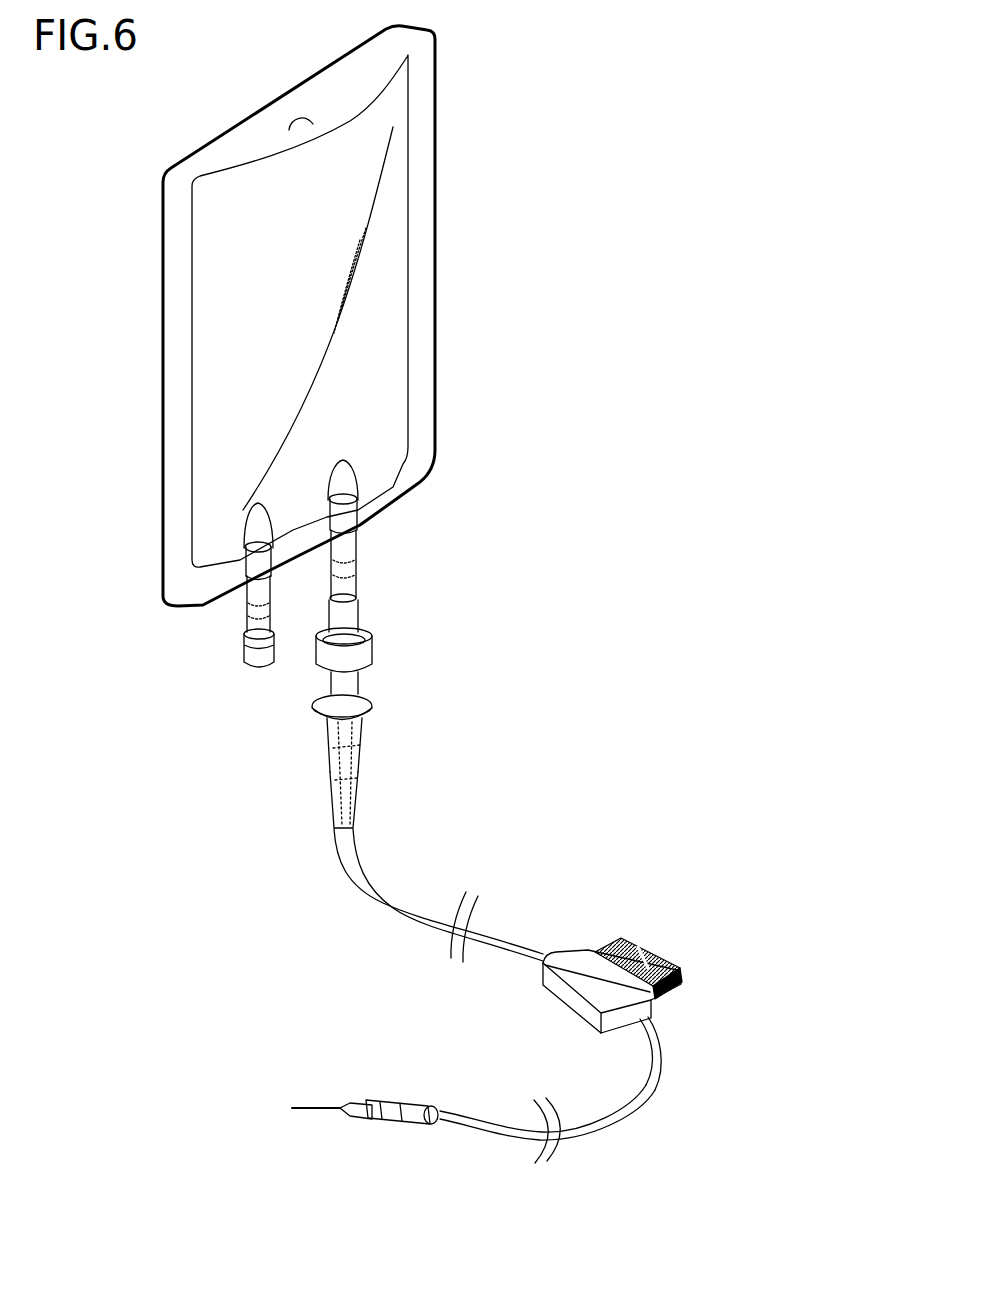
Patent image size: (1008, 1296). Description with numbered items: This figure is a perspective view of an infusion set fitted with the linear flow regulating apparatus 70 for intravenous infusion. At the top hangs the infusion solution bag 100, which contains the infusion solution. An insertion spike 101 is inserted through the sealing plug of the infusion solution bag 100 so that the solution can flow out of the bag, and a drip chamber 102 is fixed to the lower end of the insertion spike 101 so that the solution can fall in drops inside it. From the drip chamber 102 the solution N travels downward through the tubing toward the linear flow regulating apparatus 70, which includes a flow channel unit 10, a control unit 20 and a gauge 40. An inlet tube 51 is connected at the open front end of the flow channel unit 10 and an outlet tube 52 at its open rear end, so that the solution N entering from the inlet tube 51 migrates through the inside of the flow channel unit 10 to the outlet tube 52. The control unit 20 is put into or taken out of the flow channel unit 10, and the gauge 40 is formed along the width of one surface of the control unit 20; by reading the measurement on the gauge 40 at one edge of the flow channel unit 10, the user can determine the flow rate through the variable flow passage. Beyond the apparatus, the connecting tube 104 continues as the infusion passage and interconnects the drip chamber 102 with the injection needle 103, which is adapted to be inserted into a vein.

The infusion solution bag 100 is at (390, 300).
The insertion spike 101 is at (345, 690).
The drip chamber 102 is at (348, 737).
The solution N is at (348, 785).
The inlet tube 51 is at (495, 935).
The linear flow regulating apparatus 70 is at (608, 918).
The flow channel unit 10 is at (548, 1003).
The gauge 40 is at (650, 955).
The control unit 20 is at (680, 960).
The outlet tube 52 is at (642, 1018).
The connecting tube 104 is at (620, 1115).
The injection needle 103 is at (305, 1108).